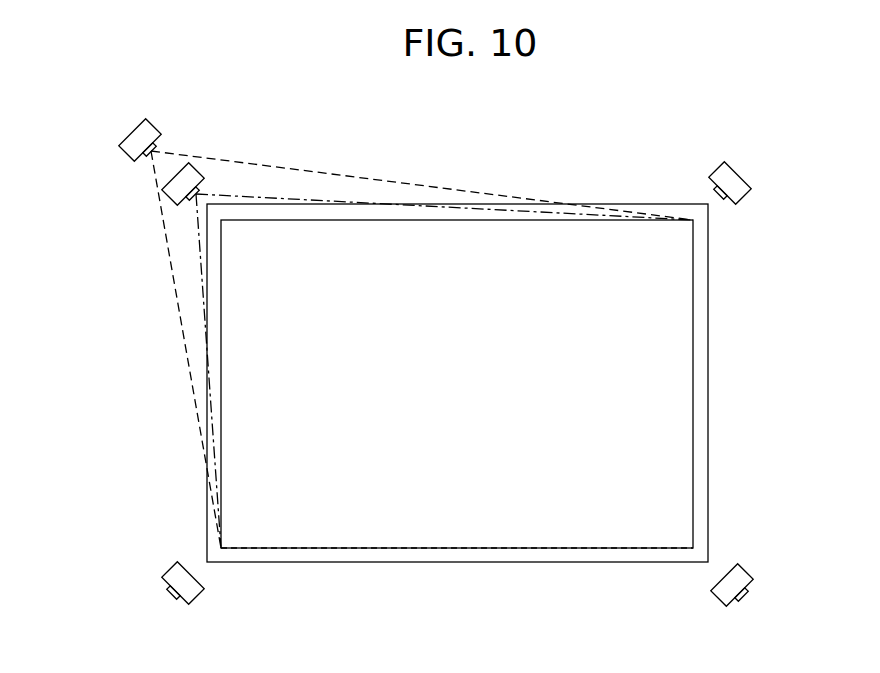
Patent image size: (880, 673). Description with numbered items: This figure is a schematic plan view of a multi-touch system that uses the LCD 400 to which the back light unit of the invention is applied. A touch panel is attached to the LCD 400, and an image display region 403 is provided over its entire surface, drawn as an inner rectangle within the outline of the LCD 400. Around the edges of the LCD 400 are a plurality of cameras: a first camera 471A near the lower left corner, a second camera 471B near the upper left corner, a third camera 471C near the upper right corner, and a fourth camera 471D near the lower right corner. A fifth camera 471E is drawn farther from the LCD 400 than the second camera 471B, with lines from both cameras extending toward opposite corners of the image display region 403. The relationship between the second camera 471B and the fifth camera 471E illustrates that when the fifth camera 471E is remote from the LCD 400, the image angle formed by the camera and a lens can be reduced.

The LCD 400 is at (708, 310).
The image display region 403 is at (682, 358).
The first camera 471A is at (176, 594).
The second camera 471B is at (194, 172).
The third camera 471C is at (742, 172).
The fourth camera 471D is at (740, 596).
The fifth camera 471E is at (128, 148).